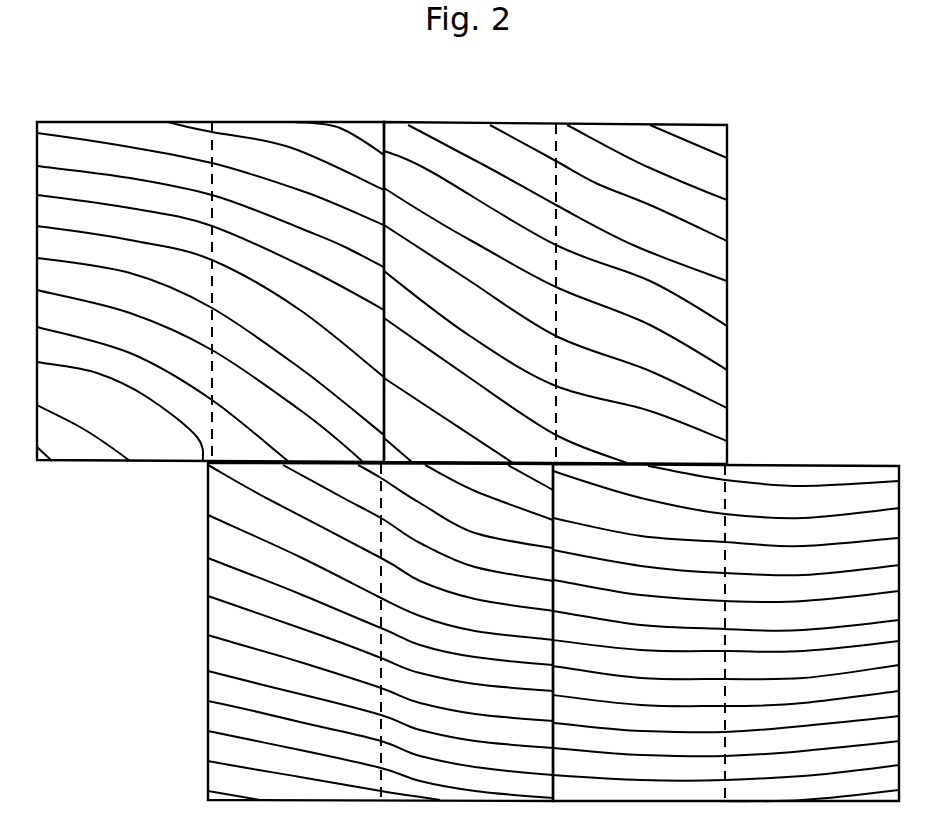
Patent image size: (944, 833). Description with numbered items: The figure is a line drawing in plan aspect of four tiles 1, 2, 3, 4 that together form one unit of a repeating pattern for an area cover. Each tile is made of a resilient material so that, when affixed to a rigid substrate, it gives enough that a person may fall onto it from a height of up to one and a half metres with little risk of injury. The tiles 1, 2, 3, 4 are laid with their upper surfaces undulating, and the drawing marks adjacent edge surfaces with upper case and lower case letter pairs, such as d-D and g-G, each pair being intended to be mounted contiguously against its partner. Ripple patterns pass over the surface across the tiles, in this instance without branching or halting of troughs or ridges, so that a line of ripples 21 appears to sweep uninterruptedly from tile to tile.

The line of ripples 21 is at (262, 338).
The tile 1 is at (210, 292).
The tile 2 is at (555, 293).
The tile 3 is at (380, 632).
The tile 4 is at (722, 632).